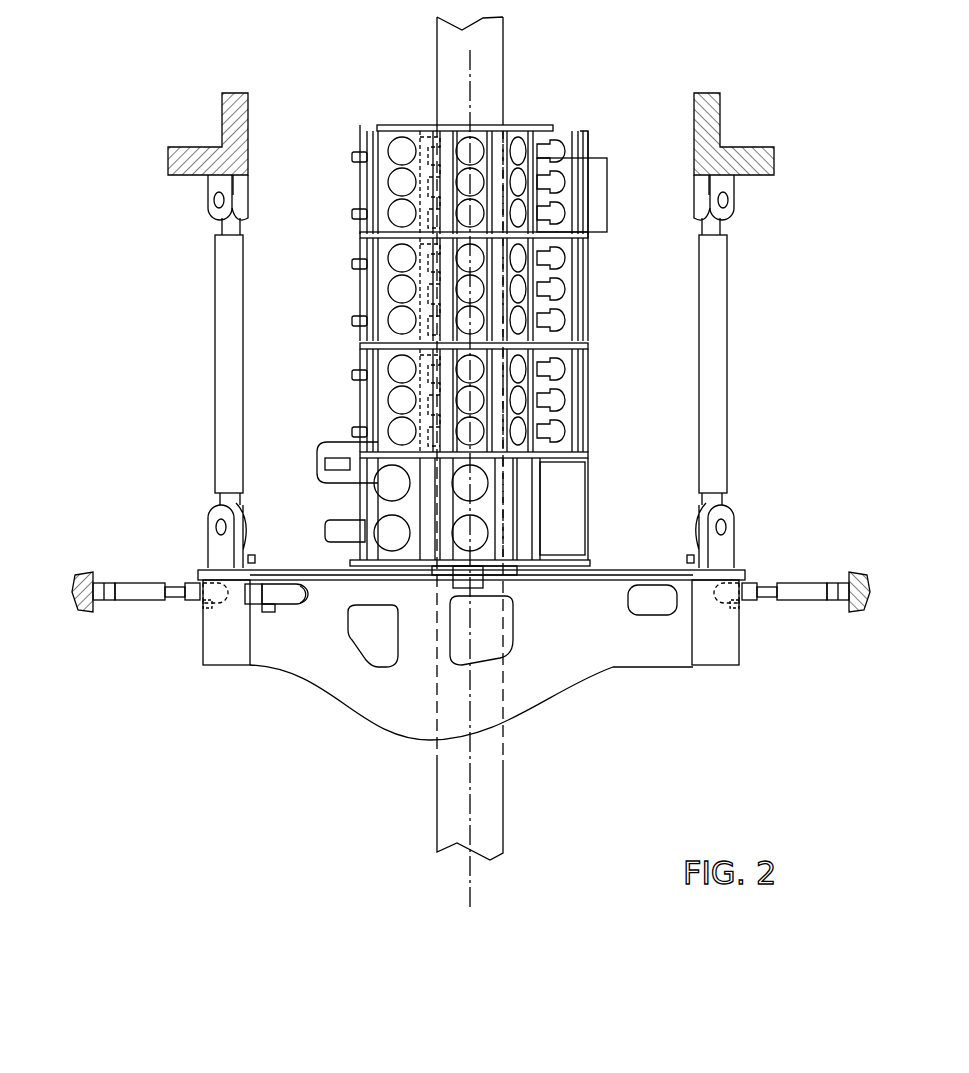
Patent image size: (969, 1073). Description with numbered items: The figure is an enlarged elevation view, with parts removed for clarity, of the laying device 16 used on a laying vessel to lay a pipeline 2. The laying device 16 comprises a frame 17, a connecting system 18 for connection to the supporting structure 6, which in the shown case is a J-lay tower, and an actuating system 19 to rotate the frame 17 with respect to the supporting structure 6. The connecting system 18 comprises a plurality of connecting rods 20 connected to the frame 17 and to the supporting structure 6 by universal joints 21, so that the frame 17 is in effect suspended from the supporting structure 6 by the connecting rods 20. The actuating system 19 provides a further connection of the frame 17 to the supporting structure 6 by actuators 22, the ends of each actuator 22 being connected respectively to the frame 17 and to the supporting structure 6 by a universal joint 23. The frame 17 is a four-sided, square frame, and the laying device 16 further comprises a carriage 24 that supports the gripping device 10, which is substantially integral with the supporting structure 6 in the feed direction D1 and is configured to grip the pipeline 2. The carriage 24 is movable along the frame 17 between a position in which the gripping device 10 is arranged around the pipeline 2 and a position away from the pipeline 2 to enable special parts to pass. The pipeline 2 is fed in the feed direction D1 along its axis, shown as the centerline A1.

The pipeline 2 is at (492, 825).
The supporting structure 6 is at (232, 107).
The gripping device 10 is at (600, 352).
The laying device 16 is at (275, 760).
The frame 17 is at (605, 602).
The connecting system 18 is at (760, 392).
The actuating system 19 is at (181, 698).
The connecting rods 20 is at (232, 342).
The universal joints 21 is at (245, 212).
The actuators 22 is at (148, 607).
The universal joint 23 is at (225, 605).
The carriage 24 is at (515, 570).
The feed direction D1 is at (402, 757).
The axis of the shaft A1 is at (472, 902).